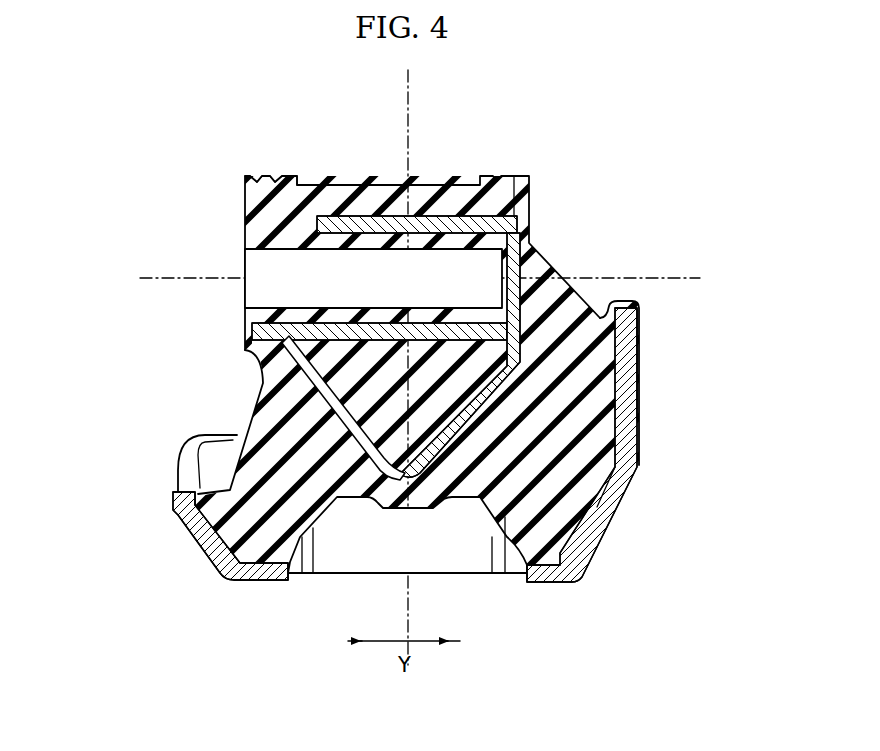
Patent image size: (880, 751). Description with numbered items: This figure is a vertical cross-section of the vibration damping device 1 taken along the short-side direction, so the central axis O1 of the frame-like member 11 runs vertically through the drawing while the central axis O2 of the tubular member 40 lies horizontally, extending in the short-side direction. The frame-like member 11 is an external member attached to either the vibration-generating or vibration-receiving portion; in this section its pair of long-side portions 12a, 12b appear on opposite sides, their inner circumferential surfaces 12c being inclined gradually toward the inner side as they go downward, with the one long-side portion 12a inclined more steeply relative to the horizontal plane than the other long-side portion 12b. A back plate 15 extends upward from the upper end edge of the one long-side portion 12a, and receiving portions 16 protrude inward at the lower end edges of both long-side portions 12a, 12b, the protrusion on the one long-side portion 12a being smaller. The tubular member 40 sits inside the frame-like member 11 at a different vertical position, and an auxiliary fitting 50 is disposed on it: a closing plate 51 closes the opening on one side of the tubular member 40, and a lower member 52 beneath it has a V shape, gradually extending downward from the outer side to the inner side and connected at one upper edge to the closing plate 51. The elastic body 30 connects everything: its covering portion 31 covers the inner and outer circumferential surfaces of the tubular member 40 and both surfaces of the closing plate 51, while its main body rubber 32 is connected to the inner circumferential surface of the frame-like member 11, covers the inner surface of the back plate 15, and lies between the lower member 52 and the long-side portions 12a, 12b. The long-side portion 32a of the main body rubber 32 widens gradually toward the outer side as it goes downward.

The vibration damping device 1 is at (440, 350).
The frame-like member 11 is at (405, 481).
The one long-side portion 12a is at (593, 538).
The other long-side portion 12b is at (205, 557).
The inner circumferential surface 12c is at (583, 490).
The back plate 15 is at (631, 328).
The receiving portion 16 is at (273, 582).
The elastic body 30 is at (409, 223).
The covering portion 31 is at (248, 178).
The main body rubber 32 is at (406, 440).
The long-side portion of main body rubber 32a is at (610, 470).
The tubular member 40 is at (506, 226).
The auxiliary fitting 50 is at (376, 344).
The closing plate 51 is at (518, 250).
The lower member 52 is at (327, 397).
The central axis of the frame-like member O1 is at (410, 92).
The central axis of the tubular member O2 is at (685, 275).